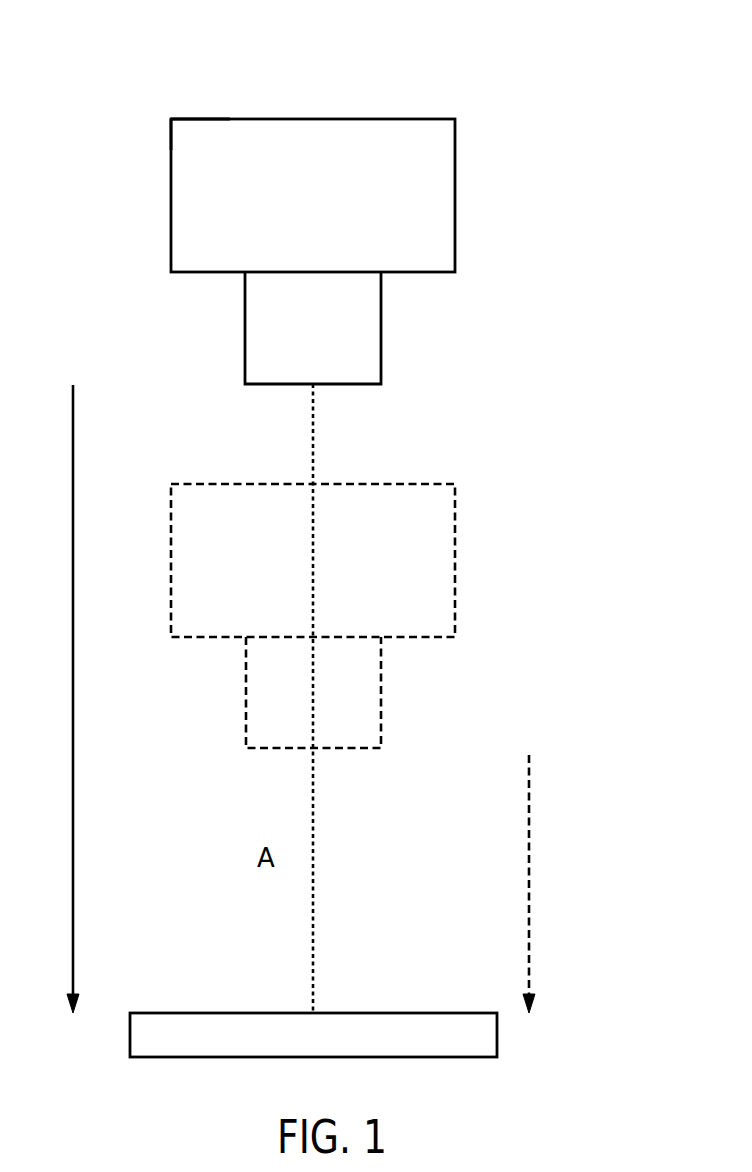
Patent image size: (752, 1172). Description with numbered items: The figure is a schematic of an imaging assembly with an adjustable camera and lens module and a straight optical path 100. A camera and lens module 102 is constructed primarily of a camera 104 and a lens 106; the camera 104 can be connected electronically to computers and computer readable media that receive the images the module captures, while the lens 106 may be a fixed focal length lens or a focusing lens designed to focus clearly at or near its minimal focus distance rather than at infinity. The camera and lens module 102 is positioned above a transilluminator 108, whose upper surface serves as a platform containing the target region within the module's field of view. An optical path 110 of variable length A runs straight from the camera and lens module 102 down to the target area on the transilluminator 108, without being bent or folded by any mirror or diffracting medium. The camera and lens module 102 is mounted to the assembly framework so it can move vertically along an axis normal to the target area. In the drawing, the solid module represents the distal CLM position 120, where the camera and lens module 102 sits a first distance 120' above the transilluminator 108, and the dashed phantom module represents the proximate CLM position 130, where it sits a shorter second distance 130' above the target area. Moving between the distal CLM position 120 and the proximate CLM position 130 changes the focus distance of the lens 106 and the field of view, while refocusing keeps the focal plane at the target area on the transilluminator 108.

The imaging assembly with an adjustable camera and lens module and a straight optica 100 is at (308, 57).
The camera and lens module 102 is at (171, 118).
The camera 104 is at (440, 195).
The lens 106 is at (381, 337).
The transilluminator 108 is at (497, 1033).
The optical path 110 is at (313, 817).
The distal CLM position 120 is at (386, 246).
The first distance 120' is at (39, 699).
The proximate CLM position 130 is at (420, 617).
The second distance 130' is at (566, 884).